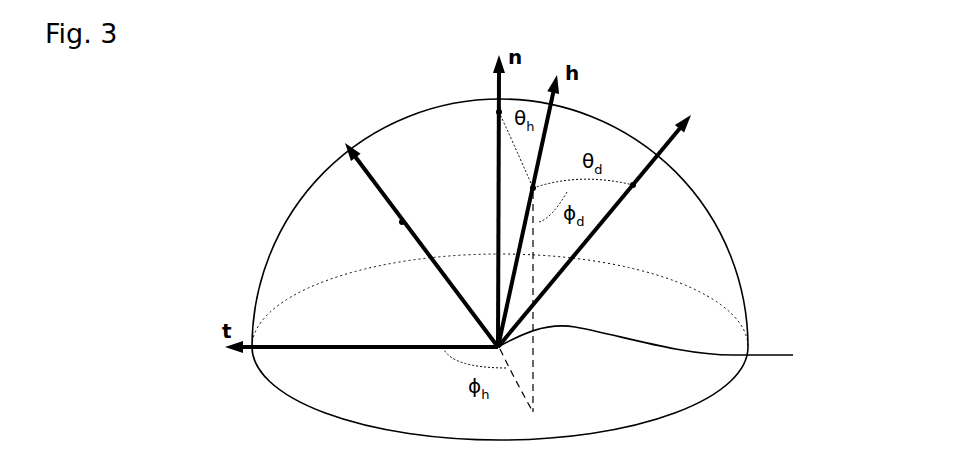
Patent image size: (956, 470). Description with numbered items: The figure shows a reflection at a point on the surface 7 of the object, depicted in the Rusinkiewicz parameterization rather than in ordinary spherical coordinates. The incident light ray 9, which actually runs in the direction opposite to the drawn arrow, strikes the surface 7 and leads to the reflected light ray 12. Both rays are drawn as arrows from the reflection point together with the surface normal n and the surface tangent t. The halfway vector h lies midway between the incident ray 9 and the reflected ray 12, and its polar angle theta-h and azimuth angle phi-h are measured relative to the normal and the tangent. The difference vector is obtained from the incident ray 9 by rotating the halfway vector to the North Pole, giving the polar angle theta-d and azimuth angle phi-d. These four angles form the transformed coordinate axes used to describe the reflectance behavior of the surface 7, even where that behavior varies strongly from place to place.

The surface 7 is at (661, 344).
The incident light ray 9 is at (667, 145).
The reflected light ray 12 is at (381, 186).